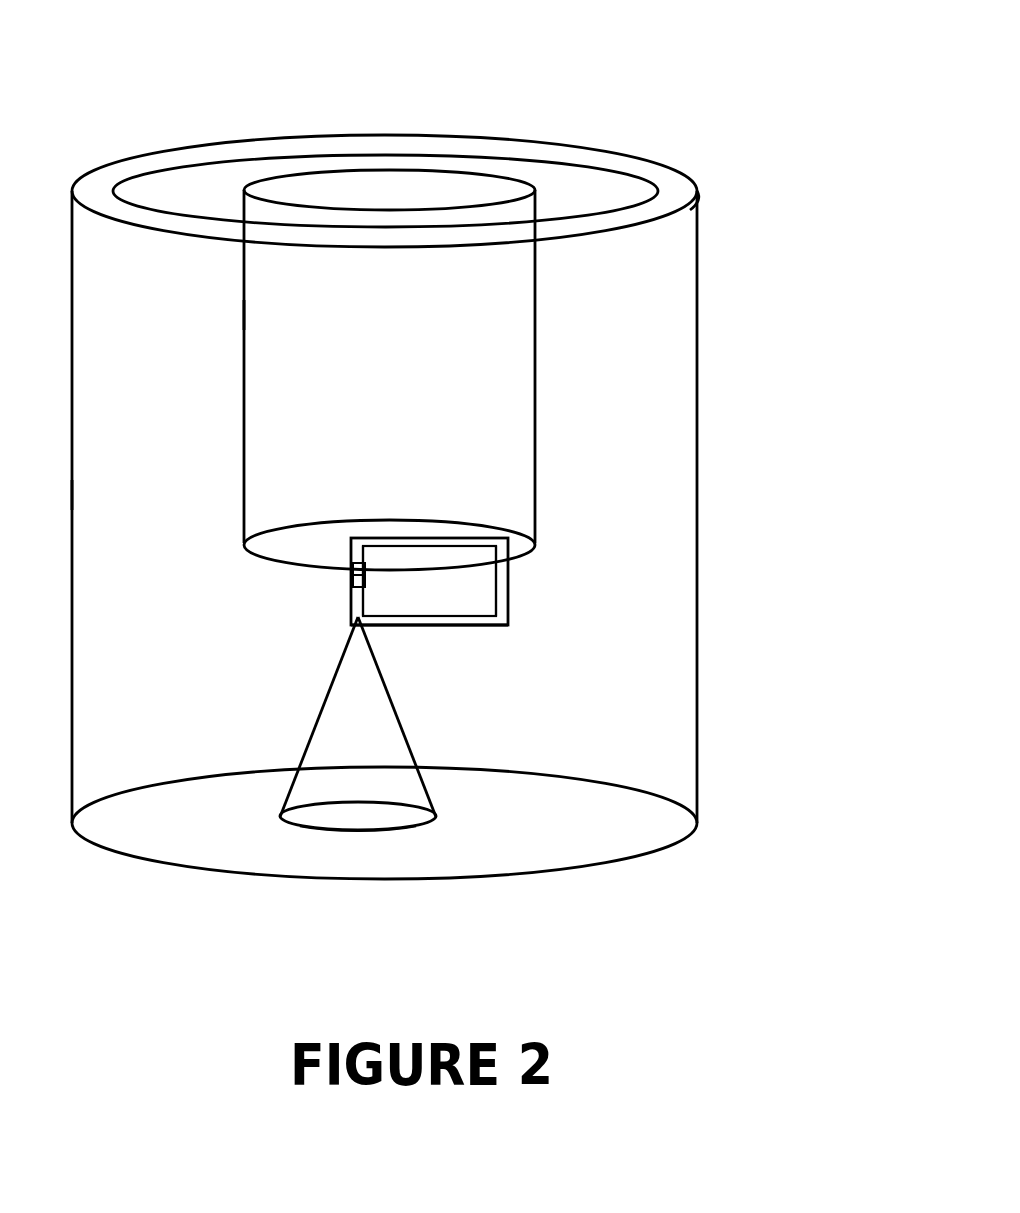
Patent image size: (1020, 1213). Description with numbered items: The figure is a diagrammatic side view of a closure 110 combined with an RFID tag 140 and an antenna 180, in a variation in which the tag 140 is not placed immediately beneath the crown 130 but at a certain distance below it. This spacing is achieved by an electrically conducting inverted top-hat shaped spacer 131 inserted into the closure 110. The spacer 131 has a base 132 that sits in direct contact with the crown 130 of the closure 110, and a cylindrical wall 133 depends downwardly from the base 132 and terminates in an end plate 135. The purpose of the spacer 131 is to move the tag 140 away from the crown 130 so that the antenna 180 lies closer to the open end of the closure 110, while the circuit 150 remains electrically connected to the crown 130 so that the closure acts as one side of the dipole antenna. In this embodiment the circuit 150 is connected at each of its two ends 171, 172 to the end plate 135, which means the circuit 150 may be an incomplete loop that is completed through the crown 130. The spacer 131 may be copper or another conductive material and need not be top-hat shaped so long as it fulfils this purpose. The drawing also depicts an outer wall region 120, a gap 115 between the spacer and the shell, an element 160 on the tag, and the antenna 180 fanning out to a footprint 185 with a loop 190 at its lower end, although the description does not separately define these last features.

The closure 110 is at (775, 384).
The annular gap between inner and outer cylinders 115 is at (188, 490).
The outer cylindrical housing 120 is at (700, 627).
The crown 130 is at (680, 187).
The spacer 131 is at (214, 397).
The base 132 is at (570, 165).
The cylindrical wall 133 is at (537, 323).
The end plate 135 is at (520, 545).
The tag 140 is at (529, 654).
The circuit 150 is at (423, 622).
The light source 160 is at (352, 577).
The first end of circuit 171 is at (361, 565).
The second end of circuit 172 is at (497, 548).
The antenna 180 is at (266, 695).
The light beam footprint 185 is at (432, 792).
The illuminated area 190 is at (362, 832).